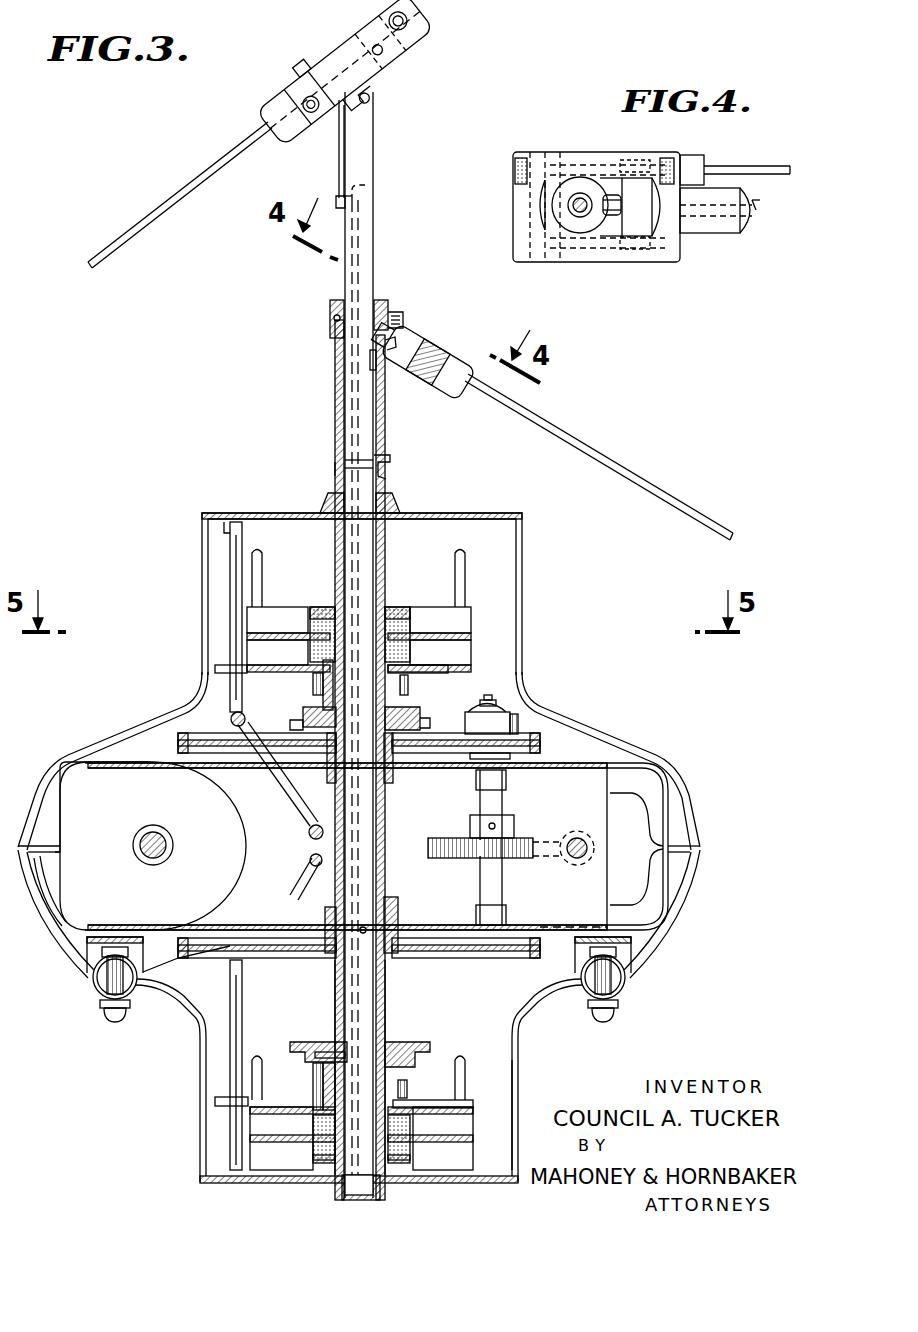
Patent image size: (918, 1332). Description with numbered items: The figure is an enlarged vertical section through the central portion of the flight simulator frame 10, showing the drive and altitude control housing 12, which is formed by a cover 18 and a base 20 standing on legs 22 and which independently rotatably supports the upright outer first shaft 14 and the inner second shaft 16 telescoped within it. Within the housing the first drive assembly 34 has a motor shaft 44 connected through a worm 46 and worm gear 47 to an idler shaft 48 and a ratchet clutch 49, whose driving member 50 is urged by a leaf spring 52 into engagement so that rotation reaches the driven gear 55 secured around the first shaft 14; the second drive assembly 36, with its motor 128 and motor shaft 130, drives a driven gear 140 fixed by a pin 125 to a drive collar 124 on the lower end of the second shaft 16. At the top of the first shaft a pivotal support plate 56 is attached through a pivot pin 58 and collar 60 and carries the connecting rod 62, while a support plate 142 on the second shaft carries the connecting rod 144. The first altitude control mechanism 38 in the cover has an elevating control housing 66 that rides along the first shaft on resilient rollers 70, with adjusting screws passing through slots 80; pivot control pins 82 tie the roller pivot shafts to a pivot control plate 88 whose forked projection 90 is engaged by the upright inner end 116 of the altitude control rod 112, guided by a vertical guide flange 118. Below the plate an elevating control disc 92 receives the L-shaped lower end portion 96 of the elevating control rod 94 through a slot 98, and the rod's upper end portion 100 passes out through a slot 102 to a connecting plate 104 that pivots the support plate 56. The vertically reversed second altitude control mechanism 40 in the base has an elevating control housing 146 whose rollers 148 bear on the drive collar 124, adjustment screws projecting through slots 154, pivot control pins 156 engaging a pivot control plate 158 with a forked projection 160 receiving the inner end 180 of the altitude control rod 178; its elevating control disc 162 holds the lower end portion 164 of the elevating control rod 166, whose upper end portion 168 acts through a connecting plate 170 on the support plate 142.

In FIG. 3, the frame 10 is at (146, 702).
In FIG. 3, the drive and altitude control housing 12 is at (596, 748).
In FIG. 3, the first shaft 14 is at (336, 400).
In FIG. 4, the first shaft 14 is at (720, 225).
In FIG. 3, the second shaft 16 is at (362, 152).
In FIG. 4, the second shaft 16 is at (582, 198).
In FIG. 3, the cover 18 is at (524, 556).
In FIG. 3, the base 20 is at (524, 1056).
In FIG. 3, the legs 22 is at (92, 985).
In FIG. 3, the first drive assembly 34 is at (588, 792).
In FIG. 3, the second drive assembly 36 is at (104, 802).
In FIG. 3, the first altitude control mechanism 38 is at (222, 598).
In FIG. 3, the second altitude control mechanism 40 is at (220, 1068).
In FIG. 3, the shaft 44 is at (578, 838).
In FIG. 3, the worm 46 is at (570, 866).
In FIG. 3, the worm gear 47 is at (452, 860).
In FIG. 3, the idler shaft 48 is at (486, 805).
In FIG. 3, the ratchet clutch 49 is at (518, 724).
In FIG. 3, the driving member 50 is at (520, 740).
In FIG. 3, the leaf spring 52 is at (490, 712).
In FIG. 3, the driven gear 55 is at (542, 745).
In FIG. 3, the pivotal support plate 56 is at (448, 350).
In FIG. 4, the pivotal support plate 56 is at (522, 212).
In FIG. 3, the pivot pin 58 is at (330, 318).
In FIG. 4, the pivot pin 58 is at (572, 250).
In FIG. 3, the collar 60 is at (380, 300).
In FIG. 4, the collar 60 is at (556, 198).
In FIG. 3, the connecting rod 62 is at (560, 430).
In FIG. 4, the connecting rod 62 is at (756, 165).
In FIG. 3, the elevating control housing 66 is at (284, 604).
In FIG. 3, the resilient rollers 70 is at (322, 620).
In FIG. 3, the slots 80 is at (256, 548).
In FIG. 3, the pivot control pin 82 is at (312, 684).
In FIG. 3, the pivot control plate 88 is at (448, 670).
In FIG. 3, the forked projection 90 is at (214, 668).
In FIG. 3, the elevating control disc 92 is at (302, 712).
In FIG. 3, the elevating control rod 94 is at (392, 503).
In FIG. 4, the elevating control rod 94 is at (756, 210).
In FIG. 3, the L-shaped lower end portion 96 is at (412, 712).
In FIG. 3, the slot 98 is at (384, 625).
In FIG. 3, the upper end portion 100 is at (390, 468).
In FIG. 4, the upper end portion 100 is at (652, 160).
In FIG. 3, the slot 102 is at (390, 343).
In FIG. 3, the connecting plate 104 is at (386, 410).
In FIG. 4, the connecting plate 104 is at (662, 230).
In FIG. 3, the altitude control rod 112 is at (230, 719).
In FIG. 3, the upright inner end 116 is at (232, 618).
In FIG. 3, the vertical guide flange 118 is at (228, 526).
In FIG. 3, the drive collar 124 is at (380, 1000).
In FIG. 3, the pin 125 is at (370, 930).
In FIG. 3, the second drive motor 128 is at (140, 775).
In FIG. 3, the shaft 130 is at (136, 850).
In FIG. 3, the driven gear 140 is at (205, 950).
In FIG. 3, the support plate 142 is at (318, 73).
In FIG. 3, the connecting rod 144 is at (196, 173).
In FIG. 3, the elevating control housing 146 is at (456, 1136).
In FIG. 3, the rollers 148 is at (322, 1152).
In FIG. 3, the slots 154 is at (256, 1056).
In FIG. 3, the pivot control pins 156 is at (314, 1082).
In FIG. 3, the pivot control plate 158 is at (440, 1102).
In FIG. 3, the forked projection 160 is at (214, 1104).
In FIG. 3, the elevating control disc 162 is at (402, 1048).
In FIG. 3, the lower end portion 164 is at (322, 1048).
In FIG. 3, the elevating control rod 166 is at (356, 372).
In FIG. 4, the elevating control rod 166 is at (576, 212).
In FIG. 3, the rod upper end portion 168 is at (338, 198).
In FIG. 3, the connecting plate 170 is at (340, 156).
In FIG. 3, the altitude control rod 178 is at (230, 1036).
In FIG. 3, the inner end 180 is at (236, 1132).